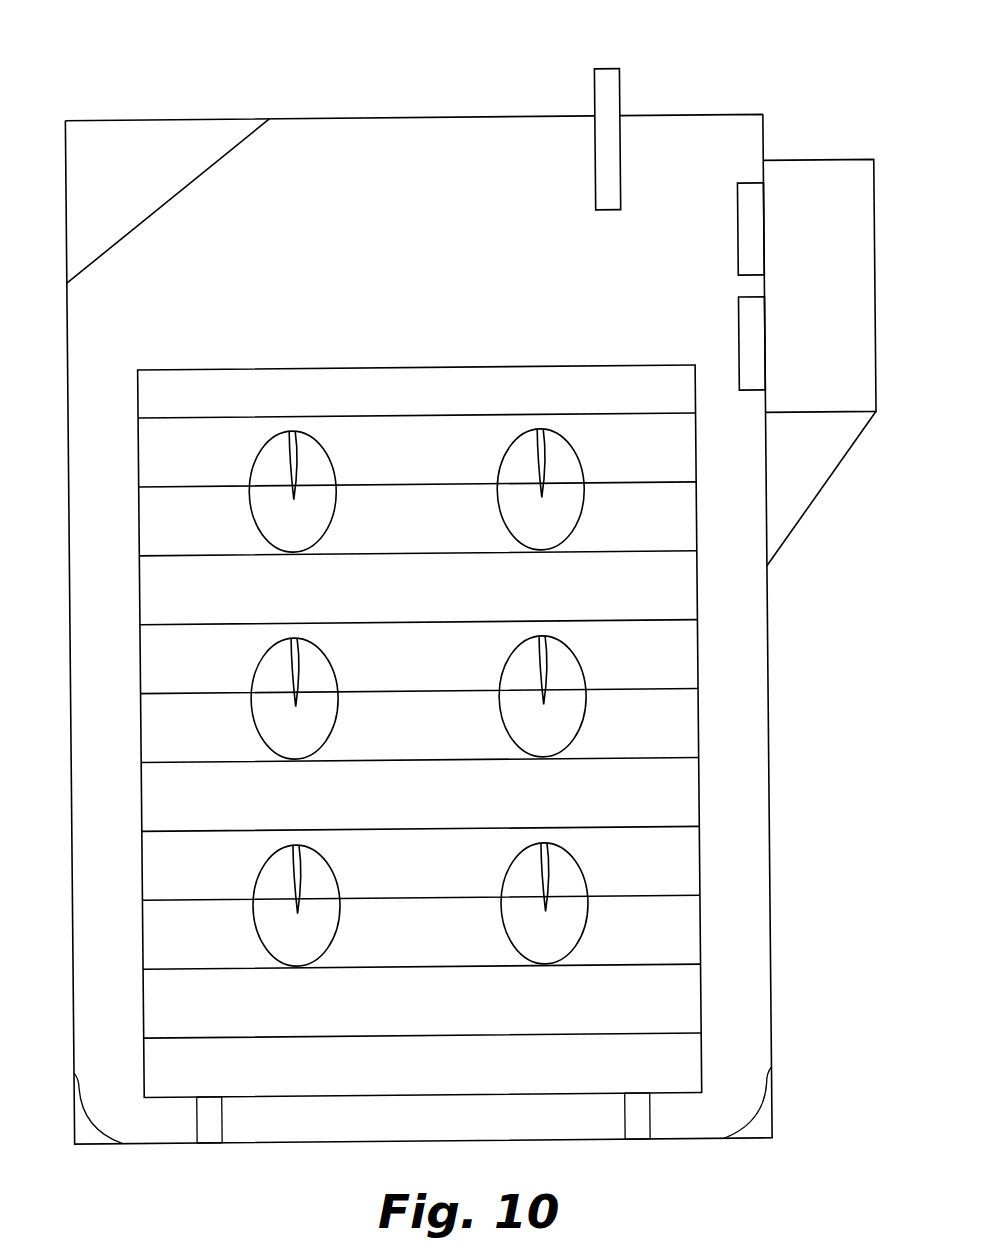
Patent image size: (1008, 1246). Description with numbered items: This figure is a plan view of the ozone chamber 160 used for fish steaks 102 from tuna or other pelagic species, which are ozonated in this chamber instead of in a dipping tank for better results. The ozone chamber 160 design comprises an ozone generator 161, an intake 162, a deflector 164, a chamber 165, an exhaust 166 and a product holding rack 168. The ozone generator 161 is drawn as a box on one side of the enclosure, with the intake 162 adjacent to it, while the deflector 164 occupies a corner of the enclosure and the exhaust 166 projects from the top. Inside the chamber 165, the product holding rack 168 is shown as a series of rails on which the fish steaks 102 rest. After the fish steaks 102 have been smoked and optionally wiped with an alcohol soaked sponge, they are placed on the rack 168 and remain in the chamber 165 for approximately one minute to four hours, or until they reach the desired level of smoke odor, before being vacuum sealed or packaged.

The ozone chamber 160 is at (363, 84).
The ozone generator 161 is at (864, 159).
The intake 162 is at (804, 484).
The deflector 164 is at (103, 269).
The chamber 165 is at (419, 681).
The exhaust 166 is at (617, 90).
The product holding rack 168 is at (638, 482).
The fish steaks 102 is at (512, 659).